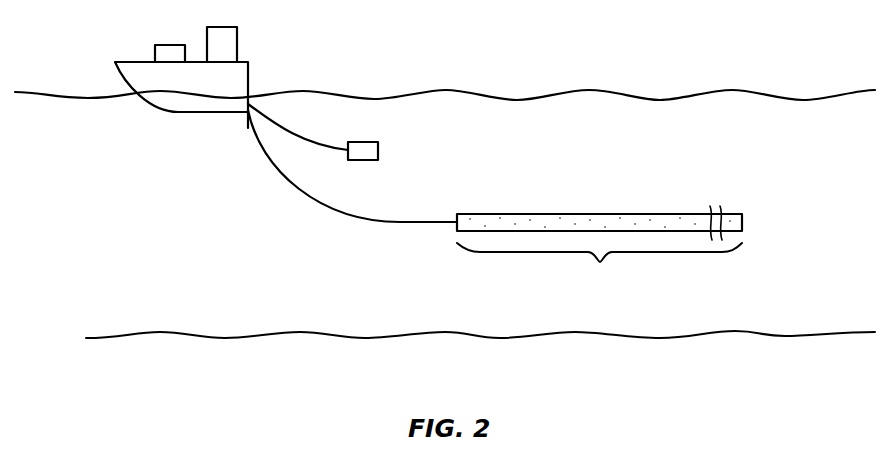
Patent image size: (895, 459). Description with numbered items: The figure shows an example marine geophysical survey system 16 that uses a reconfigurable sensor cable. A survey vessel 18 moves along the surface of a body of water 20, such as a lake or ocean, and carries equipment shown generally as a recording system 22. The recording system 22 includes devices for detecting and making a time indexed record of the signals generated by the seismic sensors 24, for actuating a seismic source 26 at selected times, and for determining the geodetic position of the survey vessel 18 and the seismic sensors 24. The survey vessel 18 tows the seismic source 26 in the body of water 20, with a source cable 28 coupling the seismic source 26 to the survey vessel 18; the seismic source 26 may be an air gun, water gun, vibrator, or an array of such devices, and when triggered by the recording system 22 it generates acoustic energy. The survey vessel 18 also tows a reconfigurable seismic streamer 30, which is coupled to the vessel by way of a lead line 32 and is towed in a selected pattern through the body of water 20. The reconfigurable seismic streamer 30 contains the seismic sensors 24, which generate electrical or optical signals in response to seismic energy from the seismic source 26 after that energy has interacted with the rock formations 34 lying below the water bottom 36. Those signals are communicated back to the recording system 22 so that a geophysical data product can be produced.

The marine geophysical survey system 16 is at (221, 183).
The survey vessel 18 is at (250, 70).
The body of water 20 is at (92, 183).
The recording system 22 is at (172, 45).
The seismic sensors 24 is at (490, 213).
The seismic source 26 is at (378, 151).
The source cable 28 is at (289, 134).
The reconfigurable seismic streamer 30 is at (599, 270).
The lead line 32 is at (333, 208).
The rock formations 34 is at (711, 381).
The water bottom 36 is at (785, 335).